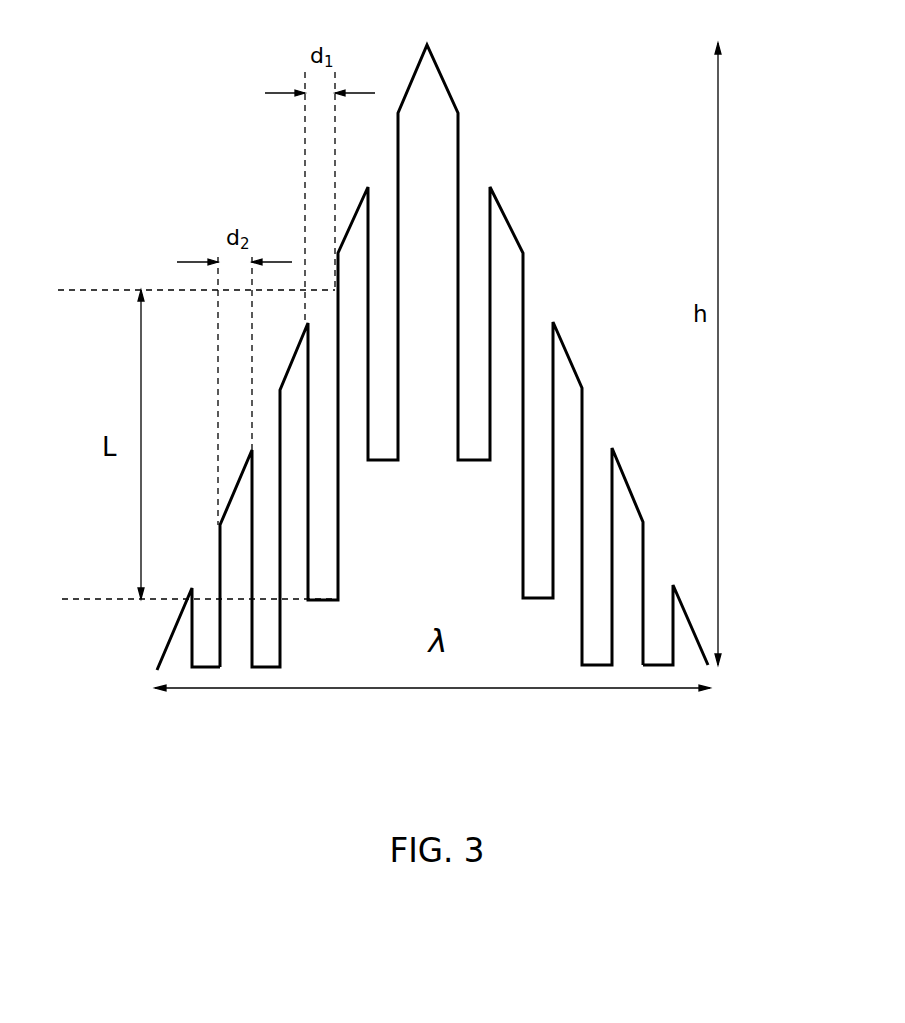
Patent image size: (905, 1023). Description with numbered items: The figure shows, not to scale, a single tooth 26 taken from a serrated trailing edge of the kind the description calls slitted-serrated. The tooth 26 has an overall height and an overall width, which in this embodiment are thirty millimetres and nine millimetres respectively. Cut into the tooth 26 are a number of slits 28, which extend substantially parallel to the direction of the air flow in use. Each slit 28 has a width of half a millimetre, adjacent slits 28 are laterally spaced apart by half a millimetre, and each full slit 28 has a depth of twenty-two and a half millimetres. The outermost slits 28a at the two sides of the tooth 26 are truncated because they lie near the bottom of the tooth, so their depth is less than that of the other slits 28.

The tooth 26 is at (424, 378).
The slits 28 is at (597, 458).
The truncated slits 28a is at (202, 642).